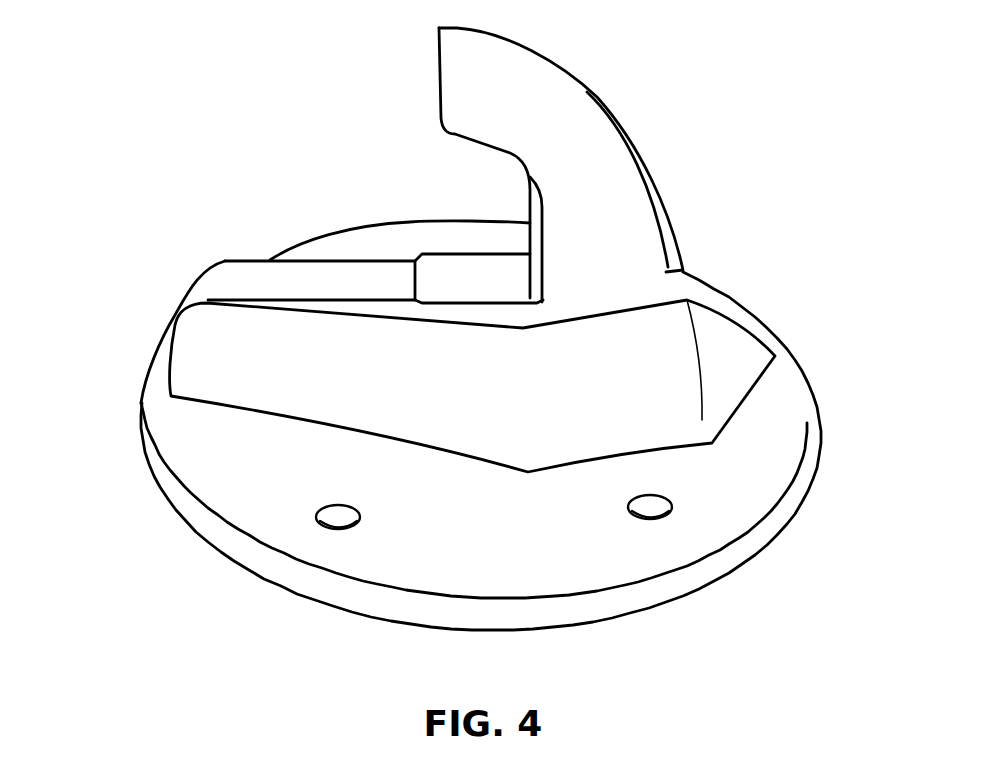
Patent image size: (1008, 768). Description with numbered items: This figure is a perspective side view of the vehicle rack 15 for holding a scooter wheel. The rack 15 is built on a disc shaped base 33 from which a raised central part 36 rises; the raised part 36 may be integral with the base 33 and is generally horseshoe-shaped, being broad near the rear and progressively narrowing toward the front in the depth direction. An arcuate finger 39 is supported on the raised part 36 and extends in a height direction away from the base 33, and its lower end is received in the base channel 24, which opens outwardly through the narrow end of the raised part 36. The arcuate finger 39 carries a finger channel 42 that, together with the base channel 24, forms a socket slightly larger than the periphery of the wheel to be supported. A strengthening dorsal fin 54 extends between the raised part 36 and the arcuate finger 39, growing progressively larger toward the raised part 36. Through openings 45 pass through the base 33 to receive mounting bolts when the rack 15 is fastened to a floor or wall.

The rack 15 is at (122, 520).
The base channel 24 is at (233, 300).
The disc shaped base 33 is at (740, 513).
The raised central part 36 is at (652, 343).
The arcuate finger 39 is at (548, 70).
The finger channel 42 is at (425, 66).
The through openings 45 is at (317, 515).
The strengthening dorsal fin 54 is at (667, 230).